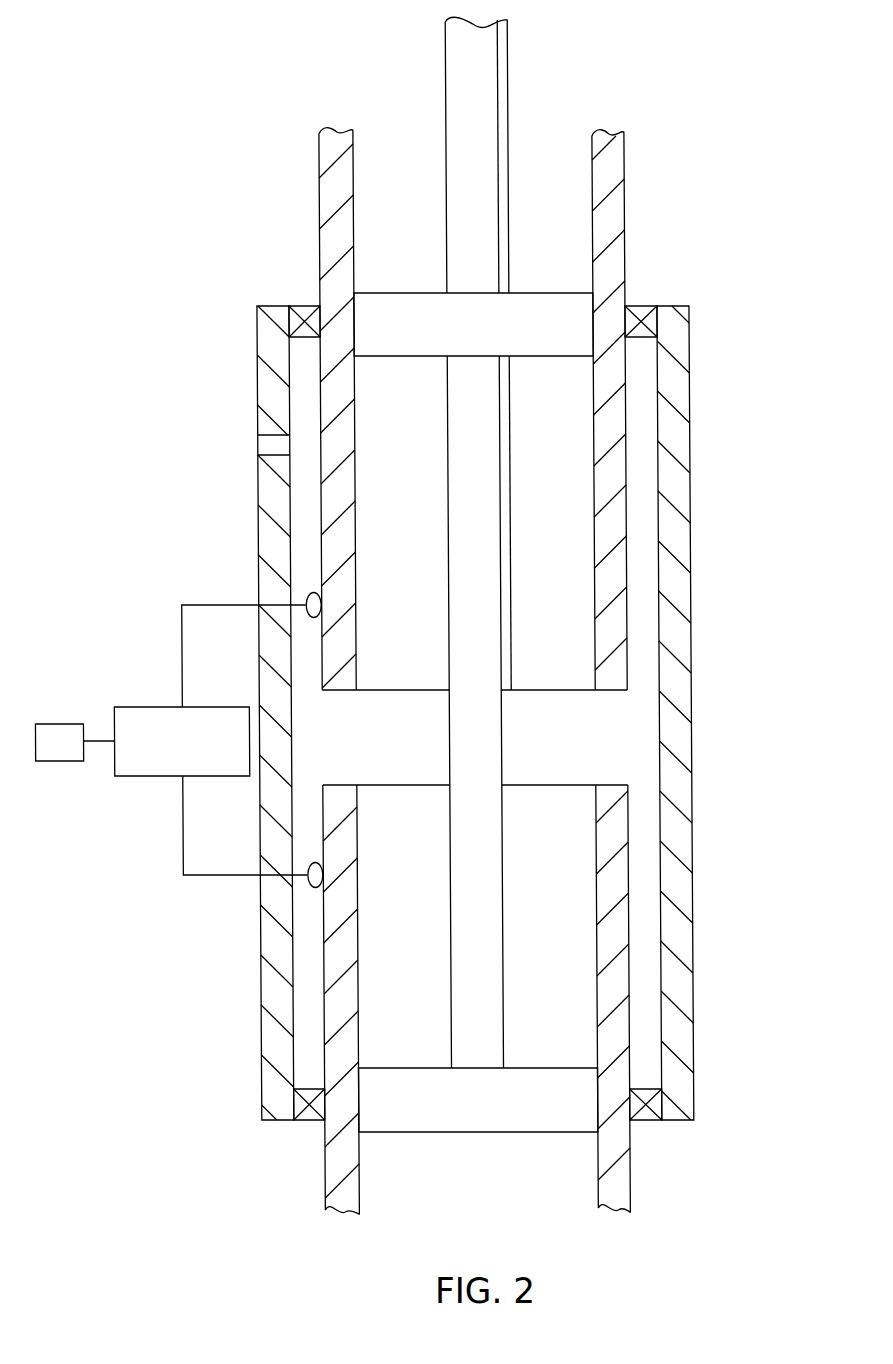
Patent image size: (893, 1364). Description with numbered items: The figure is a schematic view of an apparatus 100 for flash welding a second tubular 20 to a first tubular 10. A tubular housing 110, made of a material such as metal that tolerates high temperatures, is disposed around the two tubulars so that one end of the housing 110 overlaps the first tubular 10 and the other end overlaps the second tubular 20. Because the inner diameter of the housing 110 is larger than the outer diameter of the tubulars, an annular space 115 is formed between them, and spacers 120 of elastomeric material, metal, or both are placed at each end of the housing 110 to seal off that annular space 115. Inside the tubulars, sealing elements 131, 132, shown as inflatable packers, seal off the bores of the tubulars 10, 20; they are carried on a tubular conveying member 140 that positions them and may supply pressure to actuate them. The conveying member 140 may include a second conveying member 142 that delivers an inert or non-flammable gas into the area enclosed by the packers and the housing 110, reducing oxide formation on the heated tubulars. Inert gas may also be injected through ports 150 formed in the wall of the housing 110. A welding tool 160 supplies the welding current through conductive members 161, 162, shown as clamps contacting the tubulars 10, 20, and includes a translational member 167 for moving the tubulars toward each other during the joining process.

The apparatus 100 is at (171, 97).
The tubular housing 110 is at (692, 490).
The annular space 115 is at (645, 572).
The spacers 120 is at (641, 306).
The first tubular 10 is at (630, 903).
The second tubular 20 is at (628, 665).
The sealing element 131 is at (538, 1132).
The sealing element 132 is at (552, 293).
The tubular conveying member 140 is at (448, 35).
The second conveying member 142 is at (513, 70).
The ports 150 is at (259, 447).
The welding tool 160 is at (134, 706).
The conductive member 161 is at (262, 876).
The conductive member 162 is at (262, 598).
The translational member 167 is at (74, 742).